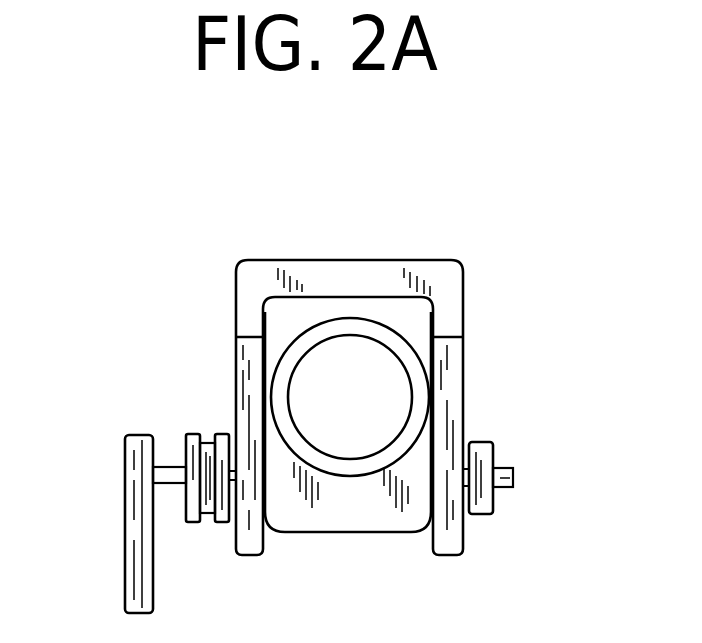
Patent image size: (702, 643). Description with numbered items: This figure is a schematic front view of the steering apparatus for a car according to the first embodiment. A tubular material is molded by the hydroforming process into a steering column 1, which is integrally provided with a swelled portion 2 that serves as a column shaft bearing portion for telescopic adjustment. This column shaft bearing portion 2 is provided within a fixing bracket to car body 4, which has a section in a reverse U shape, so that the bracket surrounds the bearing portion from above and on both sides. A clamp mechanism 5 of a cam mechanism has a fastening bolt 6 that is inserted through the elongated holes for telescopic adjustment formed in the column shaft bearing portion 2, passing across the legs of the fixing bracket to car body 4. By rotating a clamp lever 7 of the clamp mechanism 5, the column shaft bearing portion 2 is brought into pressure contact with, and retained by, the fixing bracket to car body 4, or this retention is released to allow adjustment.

The steering column 1 is at (328, 320).
The swelled portion 2 is at (342, 532).
The fixing bracket to car body 4 is at (349, 407).
The clamp mechanism 5 is at (195, 433).
The fastening bolt 6 is at (497, 468).
The clamp lever 7 is at (126, 548).